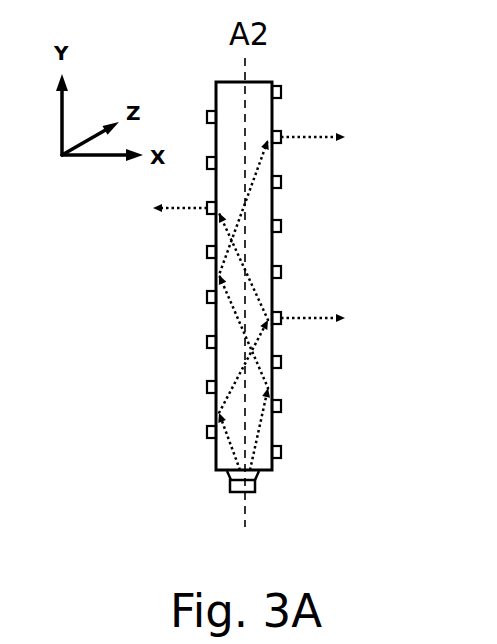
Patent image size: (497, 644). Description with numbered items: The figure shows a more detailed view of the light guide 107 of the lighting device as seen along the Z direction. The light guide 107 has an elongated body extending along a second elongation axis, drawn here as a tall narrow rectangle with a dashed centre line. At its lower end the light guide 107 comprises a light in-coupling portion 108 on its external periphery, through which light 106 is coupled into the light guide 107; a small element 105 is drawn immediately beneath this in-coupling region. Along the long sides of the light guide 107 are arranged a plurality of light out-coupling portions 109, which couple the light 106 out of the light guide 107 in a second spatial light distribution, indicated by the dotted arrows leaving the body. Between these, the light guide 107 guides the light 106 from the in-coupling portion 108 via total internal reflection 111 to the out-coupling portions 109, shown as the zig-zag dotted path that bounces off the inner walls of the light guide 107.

The light source 105 is at (270, 477).
The light 106 is at (323, 130).
The light guide 107 is at (322, 98).
The light in-coupling portion 108 is at (228, 474).
The light out-coupling portions 109 is at (277, 182).
The total internal reflection 111 is at (214, 412).